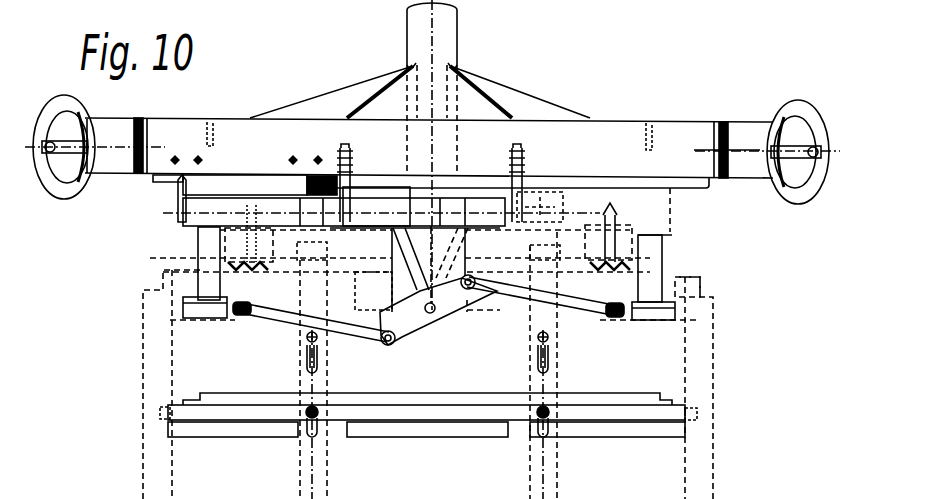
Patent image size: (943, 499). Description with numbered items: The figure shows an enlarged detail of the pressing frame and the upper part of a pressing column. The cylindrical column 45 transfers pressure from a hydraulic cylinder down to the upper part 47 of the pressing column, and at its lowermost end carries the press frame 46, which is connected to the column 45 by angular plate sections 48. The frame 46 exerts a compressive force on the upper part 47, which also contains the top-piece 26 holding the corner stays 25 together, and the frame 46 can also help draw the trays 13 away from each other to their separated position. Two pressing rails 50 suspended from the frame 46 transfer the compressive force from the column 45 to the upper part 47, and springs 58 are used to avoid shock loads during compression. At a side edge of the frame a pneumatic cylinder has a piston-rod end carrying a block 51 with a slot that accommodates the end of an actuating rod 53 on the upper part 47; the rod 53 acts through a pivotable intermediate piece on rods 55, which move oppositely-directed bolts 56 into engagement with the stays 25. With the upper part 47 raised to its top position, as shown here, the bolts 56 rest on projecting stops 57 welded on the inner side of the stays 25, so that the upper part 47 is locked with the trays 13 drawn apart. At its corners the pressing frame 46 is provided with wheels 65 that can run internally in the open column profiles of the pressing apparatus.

The trays 13 is at (598, 418).
The corner stays 25 is at (157, 393).
The top-piece 26 is at (690, 285).
The cylindrical column 45 is at (443, 24).
The press frame 46 is at (622, 120).
The upper part 47 is at (683, 265).
The angular plate sections 48 is at (360, 97).
The pressing rails 50 is at (197, 228).
The block 51 is at (332, 197).
The actuating rod 53 is at (418, 296).
The rods 55 is at (287, 317).
The bolts 56 is at (213, 322).
The projecting stops 57 is at (181, 322).
The springs 58 is at (197, 255).
The wheel 65 is at (68, 193).